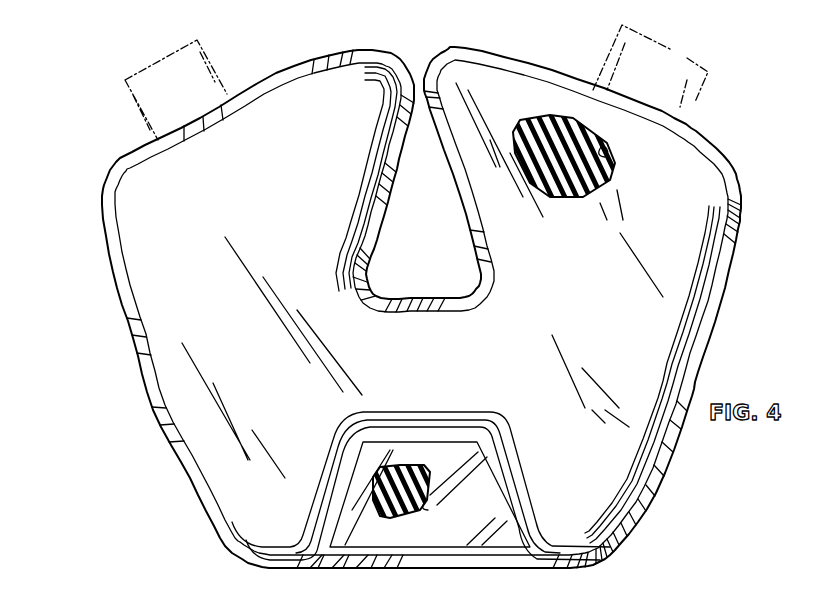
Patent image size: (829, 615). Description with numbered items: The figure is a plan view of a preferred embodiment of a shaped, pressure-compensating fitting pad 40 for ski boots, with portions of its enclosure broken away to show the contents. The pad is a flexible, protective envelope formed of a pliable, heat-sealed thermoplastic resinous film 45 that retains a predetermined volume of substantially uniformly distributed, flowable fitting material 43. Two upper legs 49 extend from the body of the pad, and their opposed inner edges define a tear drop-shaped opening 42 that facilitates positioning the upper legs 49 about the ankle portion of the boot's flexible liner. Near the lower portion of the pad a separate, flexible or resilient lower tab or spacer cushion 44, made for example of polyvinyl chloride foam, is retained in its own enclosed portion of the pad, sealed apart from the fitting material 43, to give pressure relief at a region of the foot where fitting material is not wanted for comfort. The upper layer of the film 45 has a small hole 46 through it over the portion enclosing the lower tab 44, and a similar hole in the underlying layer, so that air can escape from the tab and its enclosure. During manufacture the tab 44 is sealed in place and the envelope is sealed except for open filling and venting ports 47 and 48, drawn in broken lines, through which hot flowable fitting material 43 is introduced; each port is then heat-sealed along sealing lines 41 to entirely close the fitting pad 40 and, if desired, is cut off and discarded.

The fitting pad 40 is at (585, 348).
The sealing lines 41 is at (113, 235).
The tear drop-shaped opening 42 is at (428, 253).
The flowable fitting material 43 is at (587, 183).
The lower tab or spacer cushion 44 is at (430, 472).
The thermoplastic resinous film 45 is at (601, 147).
The hole 46 is at (431, 527).
The filling and venting port 47 is at (123, 81).
The filling and venting port 48 is at (677, 52).
The upper legs 49 is at (283, 110).